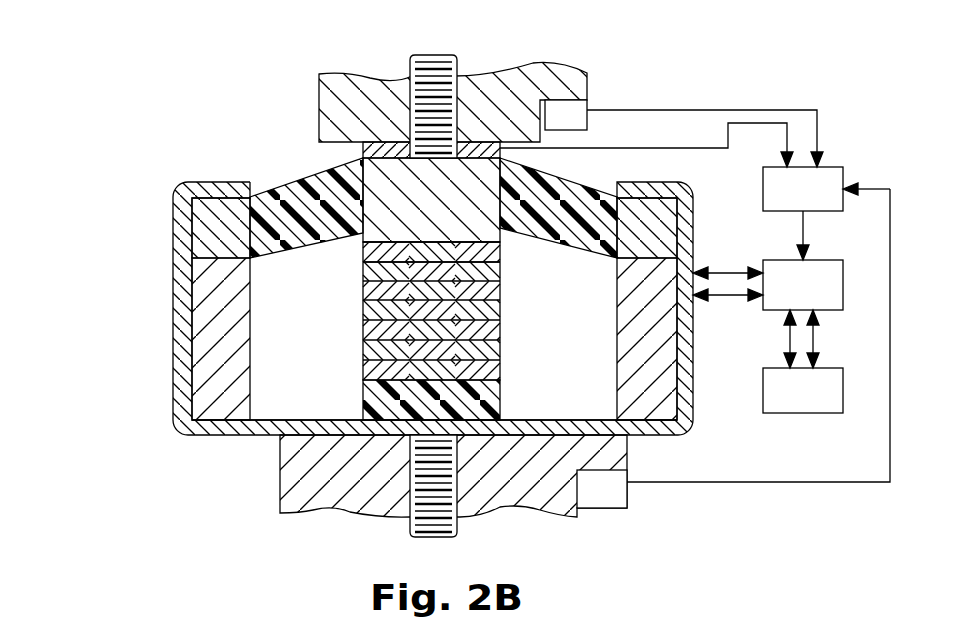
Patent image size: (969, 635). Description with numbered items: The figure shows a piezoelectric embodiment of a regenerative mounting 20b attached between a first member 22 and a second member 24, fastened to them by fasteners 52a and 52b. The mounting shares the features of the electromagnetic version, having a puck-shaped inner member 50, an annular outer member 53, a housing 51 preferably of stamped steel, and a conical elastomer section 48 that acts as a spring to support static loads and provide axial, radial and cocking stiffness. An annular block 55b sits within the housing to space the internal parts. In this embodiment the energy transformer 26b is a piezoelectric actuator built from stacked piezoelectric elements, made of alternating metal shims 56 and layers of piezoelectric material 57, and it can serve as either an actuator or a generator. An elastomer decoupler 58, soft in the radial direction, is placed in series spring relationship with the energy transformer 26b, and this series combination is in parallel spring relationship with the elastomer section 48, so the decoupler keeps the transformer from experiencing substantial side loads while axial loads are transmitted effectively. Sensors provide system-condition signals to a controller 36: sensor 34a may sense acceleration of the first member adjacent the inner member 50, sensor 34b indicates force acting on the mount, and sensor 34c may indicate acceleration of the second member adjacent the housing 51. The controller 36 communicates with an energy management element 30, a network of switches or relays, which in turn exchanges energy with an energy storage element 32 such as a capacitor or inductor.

The regenerative mounting 20b is at (168, 105).
The first member 22 is at (508, 122).
The second member 24 is at (524, 485).
The energy transformer 26b is at (523, 337).
The energy management element 30 is at (816, 296).
The energy storage element 32 is at (816, 401).
The sensor 34a is at (584, 126).
The sensor 34b is at (365, 145).
The sensor 34c is at (621, 499).
The controller 36 is at (816, 200).
The elastomer section 48 is at (311, 228).
The inner member 50 is at (449, 210).
The housing 51 is at (175, 315).
The fastener 52a is at (430, 56).
The fastener 52b is at (457, 527).
The outer member 53 is at (175, 222).
The block 55b is at (197, 395).
The metal shims 56 is at (362, 234).
The layers of piezoelectric material 57 is at (363, 262).
The elastomer decoupler 58 is at (363, 385).